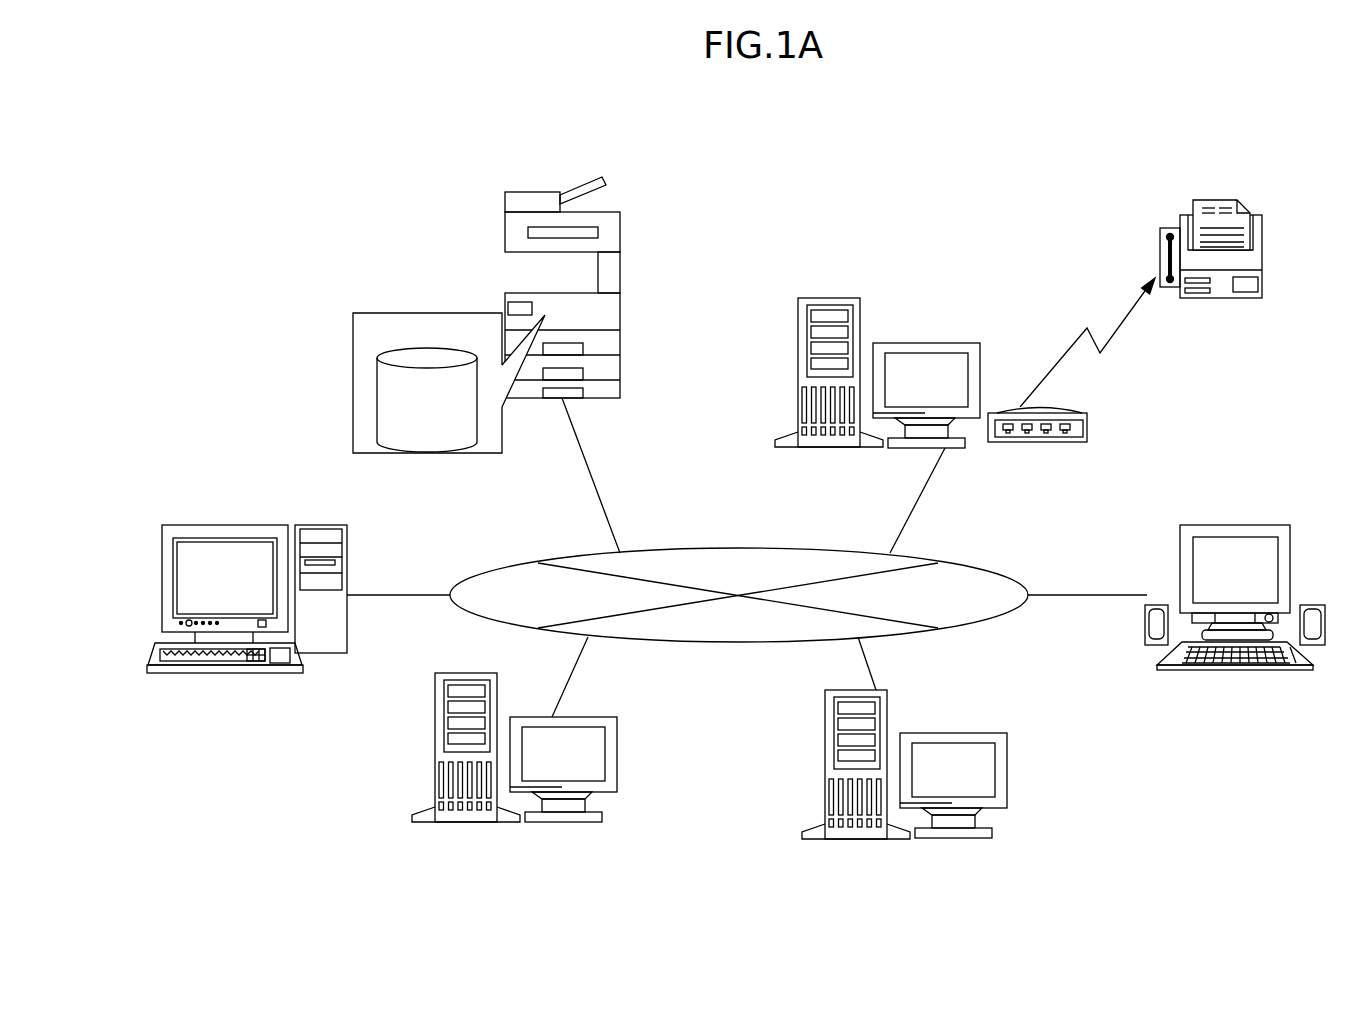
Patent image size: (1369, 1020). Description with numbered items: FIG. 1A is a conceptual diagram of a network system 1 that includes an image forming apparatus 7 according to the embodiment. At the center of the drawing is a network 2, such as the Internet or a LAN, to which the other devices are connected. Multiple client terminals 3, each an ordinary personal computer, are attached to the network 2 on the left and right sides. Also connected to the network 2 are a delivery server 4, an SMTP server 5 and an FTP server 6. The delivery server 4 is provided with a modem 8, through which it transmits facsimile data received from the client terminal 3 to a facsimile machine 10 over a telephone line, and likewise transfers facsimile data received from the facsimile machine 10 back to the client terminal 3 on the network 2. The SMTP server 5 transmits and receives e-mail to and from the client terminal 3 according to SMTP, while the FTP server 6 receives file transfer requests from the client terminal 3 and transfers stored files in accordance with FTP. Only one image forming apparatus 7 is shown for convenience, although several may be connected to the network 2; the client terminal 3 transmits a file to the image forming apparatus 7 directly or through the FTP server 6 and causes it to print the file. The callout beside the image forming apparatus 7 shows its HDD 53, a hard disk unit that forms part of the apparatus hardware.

The network system 1 is at (948, 133).
The network 2 is at (742, 642).
The client terminal 3 is at (332, 653).
The delivery server 4 is at (918, 343).
The SMTP server 5 is at (435, 757).
The FTP server 6 is at (1007, 776).
The image forming apparatus 7 is at (535, 192).
The modem 8 is at (1040, 442).
The facsimile machine 10 is at (1262, 247).
The HDD (hard disk drive) 53 is at (437, 349).